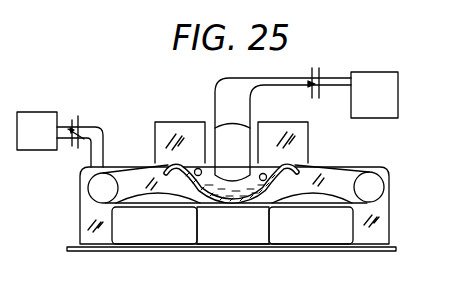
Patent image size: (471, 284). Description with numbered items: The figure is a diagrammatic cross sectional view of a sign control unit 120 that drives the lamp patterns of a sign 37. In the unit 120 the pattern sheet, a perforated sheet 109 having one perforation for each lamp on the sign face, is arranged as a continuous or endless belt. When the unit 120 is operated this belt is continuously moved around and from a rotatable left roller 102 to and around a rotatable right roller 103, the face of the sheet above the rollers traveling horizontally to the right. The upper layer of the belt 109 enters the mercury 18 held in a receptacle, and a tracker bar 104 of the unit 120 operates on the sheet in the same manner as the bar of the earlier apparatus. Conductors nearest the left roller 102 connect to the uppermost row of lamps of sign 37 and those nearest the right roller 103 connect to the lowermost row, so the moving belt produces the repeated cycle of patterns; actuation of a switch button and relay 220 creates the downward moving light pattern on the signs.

The mercury 18 is at (203, 183).
The sign 37 is at (388, 72).
The left roller 102 is at (94, 191).
The right roller 103 is at (384, 185).
The tracker bar 104 is at (212, 127).
The perforated sheet 109 is at (331, 167).
The sign control unit 120 is at (79, 229).
The relay 220 is at (45, 112).